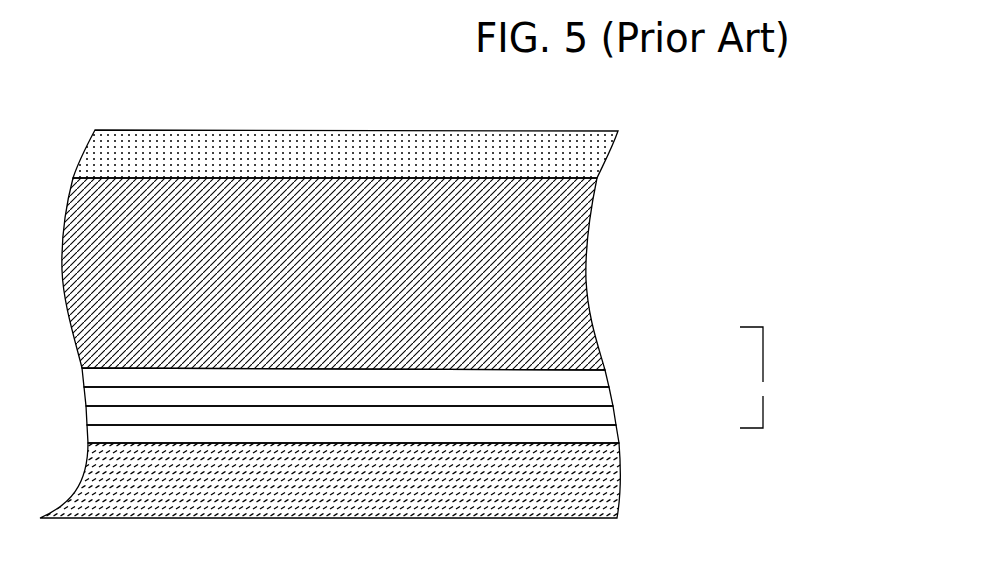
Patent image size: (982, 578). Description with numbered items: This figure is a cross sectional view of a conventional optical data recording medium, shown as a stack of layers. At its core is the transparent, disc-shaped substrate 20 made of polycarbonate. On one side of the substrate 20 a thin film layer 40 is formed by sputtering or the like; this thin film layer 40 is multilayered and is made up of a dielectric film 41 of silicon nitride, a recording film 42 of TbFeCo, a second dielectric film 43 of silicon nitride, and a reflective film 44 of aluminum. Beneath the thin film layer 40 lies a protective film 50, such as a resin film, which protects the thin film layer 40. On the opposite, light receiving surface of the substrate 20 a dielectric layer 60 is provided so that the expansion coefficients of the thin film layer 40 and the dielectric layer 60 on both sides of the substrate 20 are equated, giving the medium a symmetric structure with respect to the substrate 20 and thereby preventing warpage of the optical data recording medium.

The dielectric layer 60 is at (618, 146).
The substrate 20 is at (600, 273).
The thin film layer 40 is at (772, 367).
The dielectric film 41 is at (619, 370).
The recording film 42 is at (622, 386).
The dielectric film 43 is at (627, 408).
The reflective film 44 is at (630, 426).
The protective film 50 is at (626, 497).